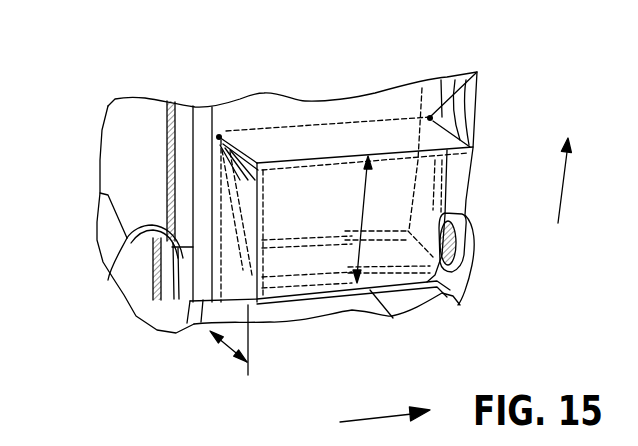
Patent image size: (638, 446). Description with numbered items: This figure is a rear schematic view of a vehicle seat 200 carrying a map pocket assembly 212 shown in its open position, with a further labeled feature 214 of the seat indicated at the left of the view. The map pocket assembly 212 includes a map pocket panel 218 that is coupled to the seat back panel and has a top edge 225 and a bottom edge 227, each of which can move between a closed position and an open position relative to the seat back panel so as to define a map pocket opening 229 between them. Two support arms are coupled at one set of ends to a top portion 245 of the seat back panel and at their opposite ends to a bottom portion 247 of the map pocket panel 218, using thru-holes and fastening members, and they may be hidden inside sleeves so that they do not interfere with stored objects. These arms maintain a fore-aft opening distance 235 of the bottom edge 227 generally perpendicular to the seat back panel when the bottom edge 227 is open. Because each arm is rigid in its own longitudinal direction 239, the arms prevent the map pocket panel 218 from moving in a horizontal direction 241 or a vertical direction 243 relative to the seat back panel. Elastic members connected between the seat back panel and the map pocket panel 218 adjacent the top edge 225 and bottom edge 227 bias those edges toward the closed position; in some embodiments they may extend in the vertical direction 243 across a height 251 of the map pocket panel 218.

The vehicle seat 200 is at (135, 78).
The map pocket assembly 212 is at (80, 180).
The outer surface 214 is at (99, 145).
The map pocket panel 218 is at (465, 207).
The top edge 225 is at (472, 133).
The bottom edge 227 is at (393, 318).
The map pocket opening 229 is at (376, 130).
The fore-aft opening distance 235 is at (227, 352).
The longitudinal direction 239 is at (242, 214).
The horizontal direction 241 is at (399, 408).
The vertical direction 243 is at (563, 192).
The top portion of seat back panel 245 is at (218, 134).
The bottom portion of map pocket panel 247 is at (262, 272).
The height of map pocket panel 251 is at (358, 220).